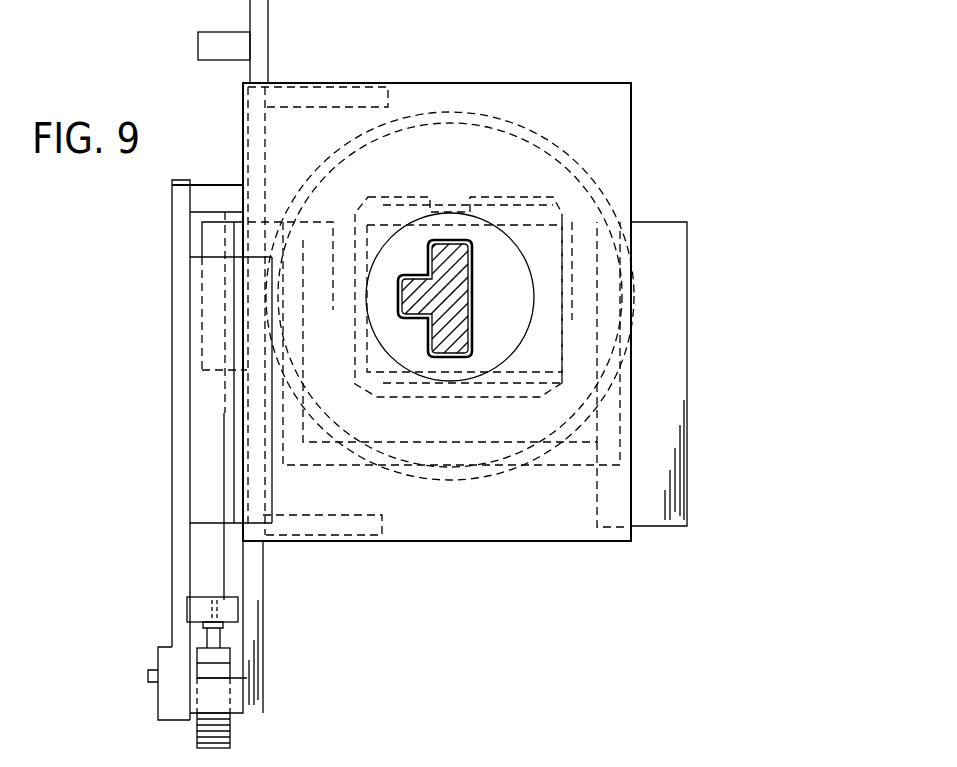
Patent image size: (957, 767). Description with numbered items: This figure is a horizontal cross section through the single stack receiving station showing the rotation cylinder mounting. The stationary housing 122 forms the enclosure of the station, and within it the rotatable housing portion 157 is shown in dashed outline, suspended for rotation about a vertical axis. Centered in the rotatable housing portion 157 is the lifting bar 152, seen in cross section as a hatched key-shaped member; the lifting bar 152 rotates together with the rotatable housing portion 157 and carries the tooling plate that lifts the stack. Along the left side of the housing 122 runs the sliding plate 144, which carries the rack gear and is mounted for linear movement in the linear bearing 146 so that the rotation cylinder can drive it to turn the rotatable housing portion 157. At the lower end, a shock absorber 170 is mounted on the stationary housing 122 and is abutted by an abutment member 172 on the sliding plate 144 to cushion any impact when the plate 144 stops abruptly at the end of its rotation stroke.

The housing 122 is at (343, 535).
The plate 144 is at (172, 585).
The linear bearing 146 is at (200, 393).
The lifting bar 152 is at (453, 243).
The rotatable housing portion 157 is at (368, 202).
The shock absorber 170 is at (232, 737).
The abutment member 172 is at (220, 630).